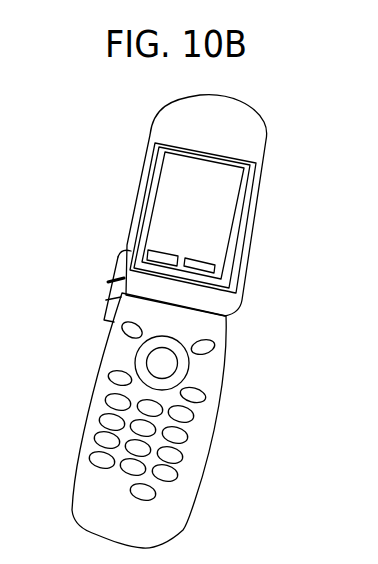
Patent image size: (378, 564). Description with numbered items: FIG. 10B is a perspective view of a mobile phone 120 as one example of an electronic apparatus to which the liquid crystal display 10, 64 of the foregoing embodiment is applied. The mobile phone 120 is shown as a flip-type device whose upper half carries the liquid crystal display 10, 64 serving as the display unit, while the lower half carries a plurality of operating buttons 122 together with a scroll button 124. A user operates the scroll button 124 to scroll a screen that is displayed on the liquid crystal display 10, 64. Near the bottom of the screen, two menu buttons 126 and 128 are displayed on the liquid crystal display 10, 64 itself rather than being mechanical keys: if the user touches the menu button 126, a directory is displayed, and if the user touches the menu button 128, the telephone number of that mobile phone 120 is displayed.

The mobile phone 120 is at (68, 253).
The liquid crystal display 10 is at (251, 266).
The liquid crystal display 64 is at (216, 213).
The menu button 126 is at (152, 250).
The menu button 128 is at (212, 267).
The scroll button 124 is at (207, 397).
The operating buttons 122 is at (192, 414).